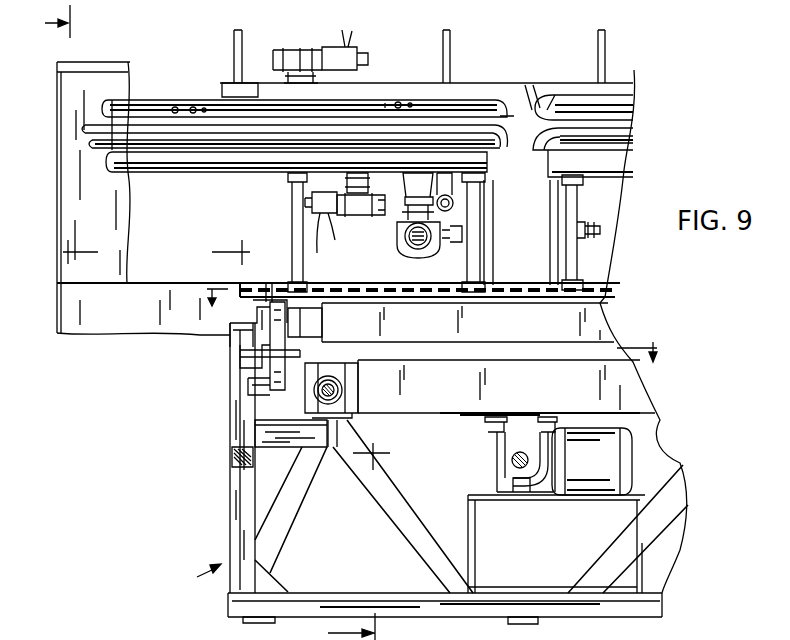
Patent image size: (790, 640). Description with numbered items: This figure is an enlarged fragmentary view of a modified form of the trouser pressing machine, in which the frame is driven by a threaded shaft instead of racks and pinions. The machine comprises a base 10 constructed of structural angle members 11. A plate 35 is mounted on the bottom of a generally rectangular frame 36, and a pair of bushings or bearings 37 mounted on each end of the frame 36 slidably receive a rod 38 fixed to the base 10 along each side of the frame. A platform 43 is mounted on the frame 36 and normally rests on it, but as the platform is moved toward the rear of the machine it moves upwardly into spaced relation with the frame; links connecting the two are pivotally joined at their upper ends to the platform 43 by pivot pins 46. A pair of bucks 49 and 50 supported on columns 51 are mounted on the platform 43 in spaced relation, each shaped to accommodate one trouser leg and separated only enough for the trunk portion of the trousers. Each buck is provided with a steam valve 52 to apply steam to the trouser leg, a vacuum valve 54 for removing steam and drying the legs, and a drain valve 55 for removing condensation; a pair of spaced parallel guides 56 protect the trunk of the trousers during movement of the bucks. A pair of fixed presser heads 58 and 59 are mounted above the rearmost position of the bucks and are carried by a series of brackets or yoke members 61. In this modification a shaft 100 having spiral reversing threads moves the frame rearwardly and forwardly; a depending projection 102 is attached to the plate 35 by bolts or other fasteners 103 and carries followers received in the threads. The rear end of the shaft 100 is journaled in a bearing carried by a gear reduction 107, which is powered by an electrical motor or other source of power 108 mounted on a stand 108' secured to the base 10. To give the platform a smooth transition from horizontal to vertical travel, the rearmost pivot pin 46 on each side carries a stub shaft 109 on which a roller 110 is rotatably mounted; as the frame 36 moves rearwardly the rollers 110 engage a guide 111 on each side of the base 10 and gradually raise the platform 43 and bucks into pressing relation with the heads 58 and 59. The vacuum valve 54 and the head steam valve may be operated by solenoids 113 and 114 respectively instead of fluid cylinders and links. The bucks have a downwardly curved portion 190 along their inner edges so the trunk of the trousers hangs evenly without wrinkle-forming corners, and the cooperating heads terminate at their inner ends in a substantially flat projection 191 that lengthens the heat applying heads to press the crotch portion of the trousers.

The base 10 is at (198, 322).
The structural angle members 11 is at (435, 628).
The plate 35 is at (525, 415).
The frame 36 is at (432, 404).
The bushings or bearings 37 is at (342, 372).
The rod 38 is at (338, 390).
The platform 43 is at (425, 331).
The pivot pins 46 is at (300, 317).
The buck 49 is at (171, 160).
The buck 50 is at (612, 162).
The columns 51 is at (293, 218).
The steam valve 52 is at (364, 204).
The vacuum valve 54 is at (413, 250).
The drain valve 55 is at (442, 192).
The guides 56 is at (551, 248).
The presser head 58 is at (152, 114).
The presser head 59 is at (620, 107).
The brackets or yoke members 61 is at (237, 50).
The shaft 100 is at (515, 465).
The depending projection 102 is at (517, 443).
The bolts or other fasteners 103 is at (487, 427).
The gear reduction 107 is at (497, 463).
The electrical motor or other source of power 108 is at (608, 461).
The stand 108' is at (556, 544).
The stub shaft 109 is at (268, 300).
The roller 110 is at (253, 347).
The guide 111 is at (253, 377).
The solenoid 113 is at (323, 233).
The solenoid 114 is at (335, 48).
The downwardly curved portion 190 is at (536, 142).
The substantially flat projection 191 is at (504, 112).